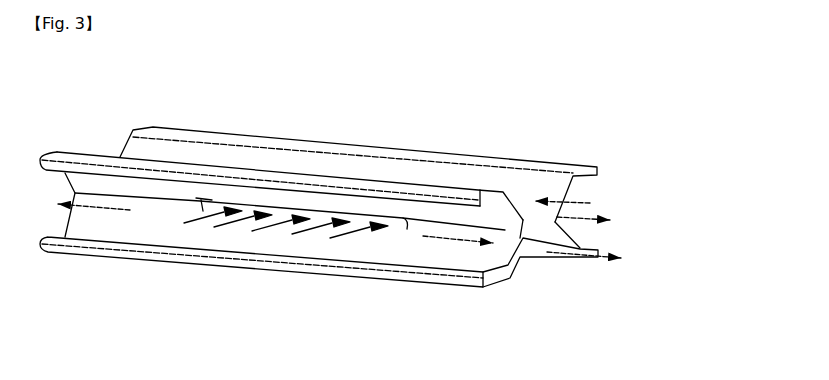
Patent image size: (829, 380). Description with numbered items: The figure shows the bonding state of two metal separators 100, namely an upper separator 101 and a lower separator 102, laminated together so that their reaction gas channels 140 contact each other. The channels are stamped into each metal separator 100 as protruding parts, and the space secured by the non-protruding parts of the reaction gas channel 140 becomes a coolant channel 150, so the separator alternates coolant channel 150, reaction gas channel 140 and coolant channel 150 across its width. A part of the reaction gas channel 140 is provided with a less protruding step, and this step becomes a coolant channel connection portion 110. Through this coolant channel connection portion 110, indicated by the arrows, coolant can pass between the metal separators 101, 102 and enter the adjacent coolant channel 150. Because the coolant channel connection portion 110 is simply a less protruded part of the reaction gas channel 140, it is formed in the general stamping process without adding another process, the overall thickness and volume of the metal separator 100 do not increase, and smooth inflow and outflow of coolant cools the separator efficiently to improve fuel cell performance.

The metal separator 100 is at (716, 152).
The metal separator 101 is at (604, 170).
The metal separator 102 is at (602, 248).
The coolant channel connection portion 110 is at (395, 224).
The reaction gas channel 140 is at (505, 222).
The coolant channel 150 is at (465, 273).